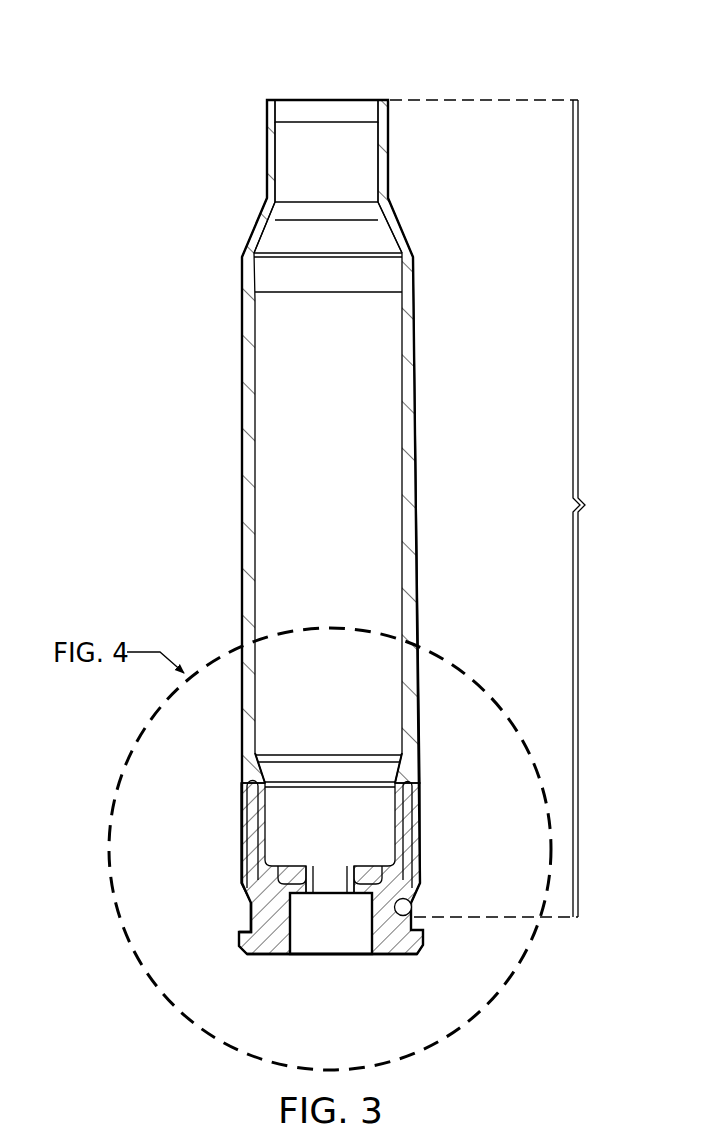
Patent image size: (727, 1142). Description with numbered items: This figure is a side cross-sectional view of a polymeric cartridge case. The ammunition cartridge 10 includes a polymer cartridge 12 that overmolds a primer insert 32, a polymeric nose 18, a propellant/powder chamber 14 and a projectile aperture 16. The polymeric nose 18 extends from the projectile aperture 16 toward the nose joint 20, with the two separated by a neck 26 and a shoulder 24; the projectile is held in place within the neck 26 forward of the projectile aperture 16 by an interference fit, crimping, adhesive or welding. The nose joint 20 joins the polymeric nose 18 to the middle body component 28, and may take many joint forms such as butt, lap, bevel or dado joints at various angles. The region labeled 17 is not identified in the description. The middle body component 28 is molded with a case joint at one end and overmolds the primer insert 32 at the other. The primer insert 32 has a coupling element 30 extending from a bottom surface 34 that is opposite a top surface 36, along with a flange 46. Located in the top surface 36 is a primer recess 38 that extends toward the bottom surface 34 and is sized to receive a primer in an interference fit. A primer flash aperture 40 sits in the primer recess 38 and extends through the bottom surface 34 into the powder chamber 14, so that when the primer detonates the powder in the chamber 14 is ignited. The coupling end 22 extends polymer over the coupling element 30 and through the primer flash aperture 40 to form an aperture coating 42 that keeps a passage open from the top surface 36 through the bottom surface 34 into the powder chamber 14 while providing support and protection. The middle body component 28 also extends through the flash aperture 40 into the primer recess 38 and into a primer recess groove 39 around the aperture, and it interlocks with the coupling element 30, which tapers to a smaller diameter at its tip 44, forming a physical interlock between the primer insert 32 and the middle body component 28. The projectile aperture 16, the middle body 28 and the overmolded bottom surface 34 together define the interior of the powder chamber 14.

The ammunition cartridge 10 is at (215, 55).
The polymer cartridge 12 is at (503, 508).
The propellant/powder chamber 14 is at (340, 532).
The projectile aperture 16 is at (338, 87).
The shoulder-body junction 17 is at (234, 278).
The polymeric nose 18 is at (395, 225).
The nose joint 20 is at (407, 263).
The coupling end 22 is at (417, 790).
The shoulder 24 is at (258, 226).
The neck 26 is at (267, 152).
The middle body component 28 is at (234, 487).
The coupling element 30 is at (410, 855).
The primer insert 32 is at (237, 951).
The bottom surface 34 is at (368, 897).
The top surface 36 is at (257, 957).
The primer recess 38 is at (360, 955).
The primer recess groove 39 is at (300, 900).
The primer flash aperture 40 is at (353, 873).
The aperture coating 42 is at (308, 873).
The tip 44 is at (425, 783).
The flange 46 is at (250, 920).